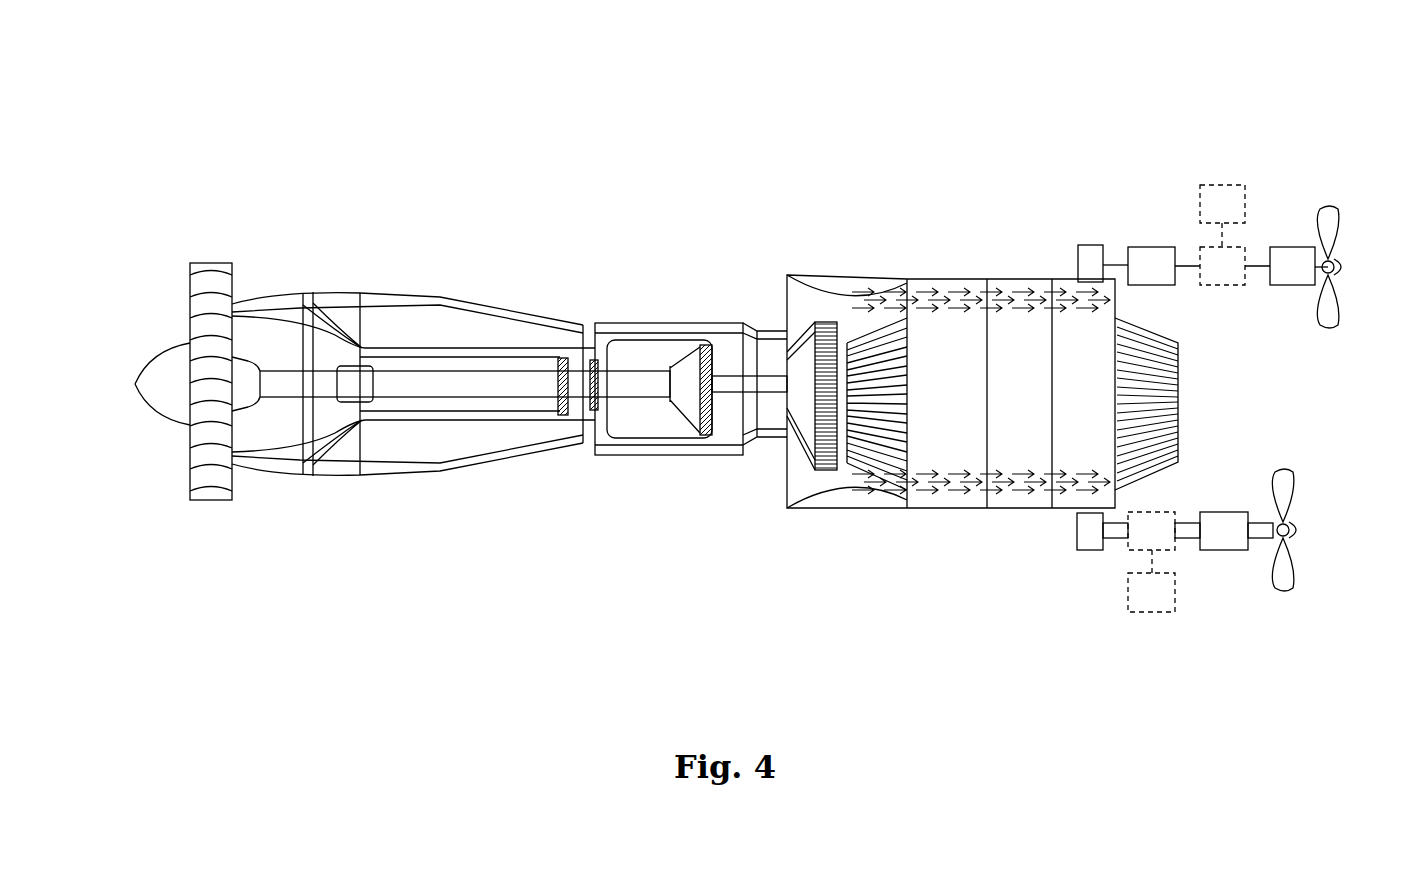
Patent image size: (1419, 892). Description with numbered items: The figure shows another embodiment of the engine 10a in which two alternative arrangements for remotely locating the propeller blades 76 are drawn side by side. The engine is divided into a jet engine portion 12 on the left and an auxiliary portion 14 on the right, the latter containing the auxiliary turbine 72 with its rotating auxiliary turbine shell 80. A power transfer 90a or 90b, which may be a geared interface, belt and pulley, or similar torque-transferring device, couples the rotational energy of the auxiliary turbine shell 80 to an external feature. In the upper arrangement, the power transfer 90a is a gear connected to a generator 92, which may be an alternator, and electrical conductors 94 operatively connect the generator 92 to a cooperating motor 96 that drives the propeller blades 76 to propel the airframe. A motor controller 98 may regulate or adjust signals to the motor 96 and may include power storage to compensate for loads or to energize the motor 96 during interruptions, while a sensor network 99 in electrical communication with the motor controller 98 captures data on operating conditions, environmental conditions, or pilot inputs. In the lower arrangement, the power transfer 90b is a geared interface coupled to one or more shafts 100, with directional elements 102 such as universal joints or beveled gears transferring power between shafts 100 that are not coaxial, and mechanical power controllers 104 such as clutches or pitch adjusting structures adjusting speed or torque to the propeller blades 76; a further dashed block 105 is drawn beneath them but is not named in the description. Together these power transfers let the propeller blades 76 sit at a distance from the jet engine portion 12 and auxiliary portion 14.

The engine 10a is at (811, 178).
The jet engine portion 12 is at (123, 600).
The auxiliary portion 14 is at (1110, 588).
The auxiliary turbine 72 is at (1120, 218).
The propeller blades 76 is at (1307, 464).
The auxiliary turbine shell 80 is at (1073, 413).
The power transfer 90a is at (1092, 245).
The power transfer 90b is at (1076, 530).
The generator 92 is at (1151, 266).
The electrical conductors 94 is at (1117, 262).
The motor 96 is at (1292, 266).
The motor controller 98 is at (1222, 266).
The sensor network 99 is at (1222, 216).
The shafts 100 is at (1117, 541).
The directional elements 102 is at (1224, 531).
The mechanical power controllers 104 is at (1151, 531).
The controller 105 is at (1151, 581).